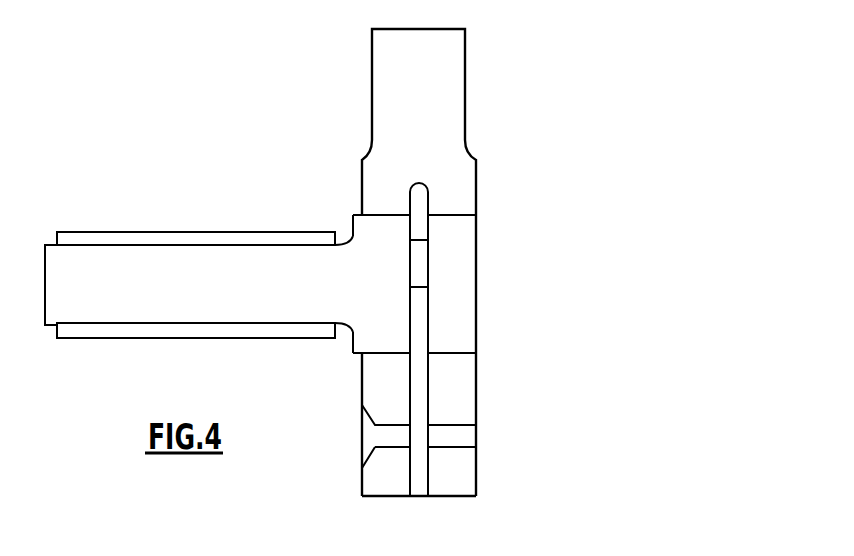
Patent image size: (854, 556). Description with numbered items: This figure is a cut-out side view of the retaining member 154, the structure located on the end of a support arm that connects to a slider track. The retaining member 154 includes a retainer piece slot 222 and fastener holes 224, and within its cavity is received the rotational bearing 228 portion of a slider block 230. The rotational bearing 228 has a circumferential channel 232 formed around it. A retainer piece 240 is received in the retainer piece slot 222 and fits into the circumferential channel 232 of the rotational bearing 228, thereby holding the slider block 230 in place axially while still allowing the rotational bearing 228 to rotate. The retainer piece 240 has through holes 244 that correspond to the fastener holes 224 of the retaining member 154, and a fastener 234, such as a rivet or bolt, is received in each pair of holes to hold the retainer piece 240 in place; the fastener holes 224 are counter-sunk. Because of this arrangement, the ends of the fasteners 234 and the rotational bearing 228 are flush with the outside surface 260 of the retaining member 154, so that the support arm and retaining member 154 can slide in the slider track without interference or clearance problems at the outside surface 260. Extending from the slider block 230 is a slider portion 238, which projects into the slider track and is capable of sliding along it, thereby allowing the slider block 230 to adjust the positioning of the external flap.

The retaining member 154 is at (512, 178).
The retainer piece slot 222 is at (422, 192).
The fastener holes 224 is at (476, 441).
The rotational bearing 228 is at (385, 213).
The slider block 230 is at (153, 218).
The circumferential channel 232 is at (422, 231).
The fastener 234 is at (362, 452).
The slider portion 238 is at (198, 240).
The retainer piece 240 is at (422, 340).
The through holes 244 is at (420, 437).
The outside surface 260 is at (476, 472).